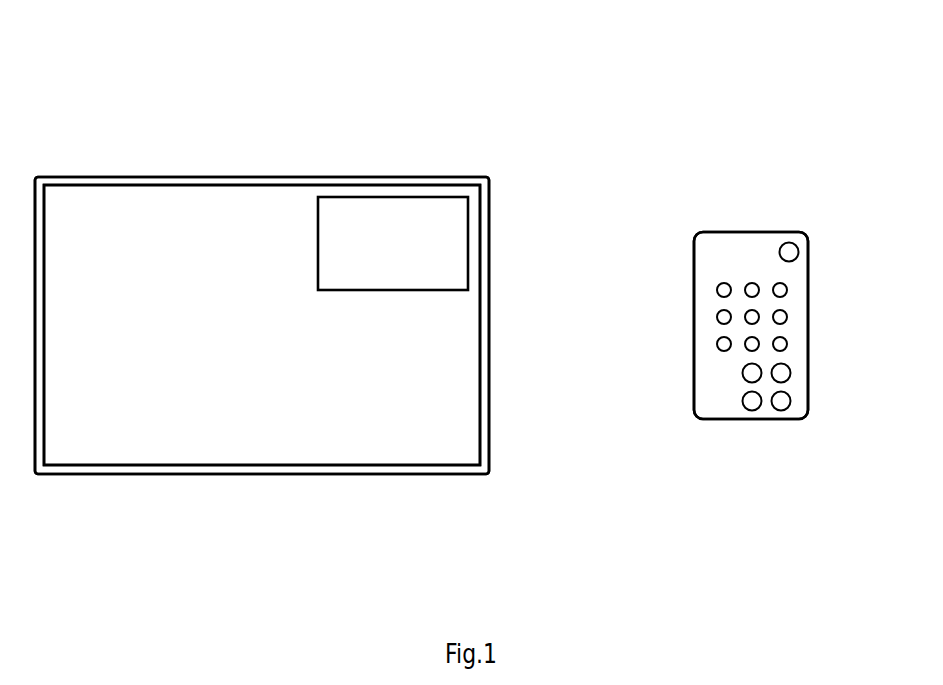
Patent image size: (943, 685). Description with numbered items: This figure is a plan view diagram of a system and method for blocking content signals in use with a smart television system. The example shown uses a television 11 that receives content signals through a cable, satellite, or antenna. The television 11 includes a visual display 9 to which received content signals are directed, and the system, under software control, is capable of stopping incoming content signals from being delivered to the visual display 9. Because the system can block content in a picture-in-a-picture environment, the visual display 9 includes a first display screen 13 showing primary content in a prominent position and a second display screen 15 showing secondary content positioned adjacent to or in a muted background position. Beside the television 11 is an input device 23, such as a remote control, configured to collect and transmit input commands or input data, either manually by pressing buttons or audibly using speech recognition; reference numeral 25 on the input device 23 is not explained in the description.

The visual display 9 is at (118, 104).
The television 11 is at (290, 475).
The first display screen 13 is at (229, 228).
The second display screen 15 is at (393, 228).
The input device 23 is at (810, 193).
The remote control housing 25 is at (717, 399).